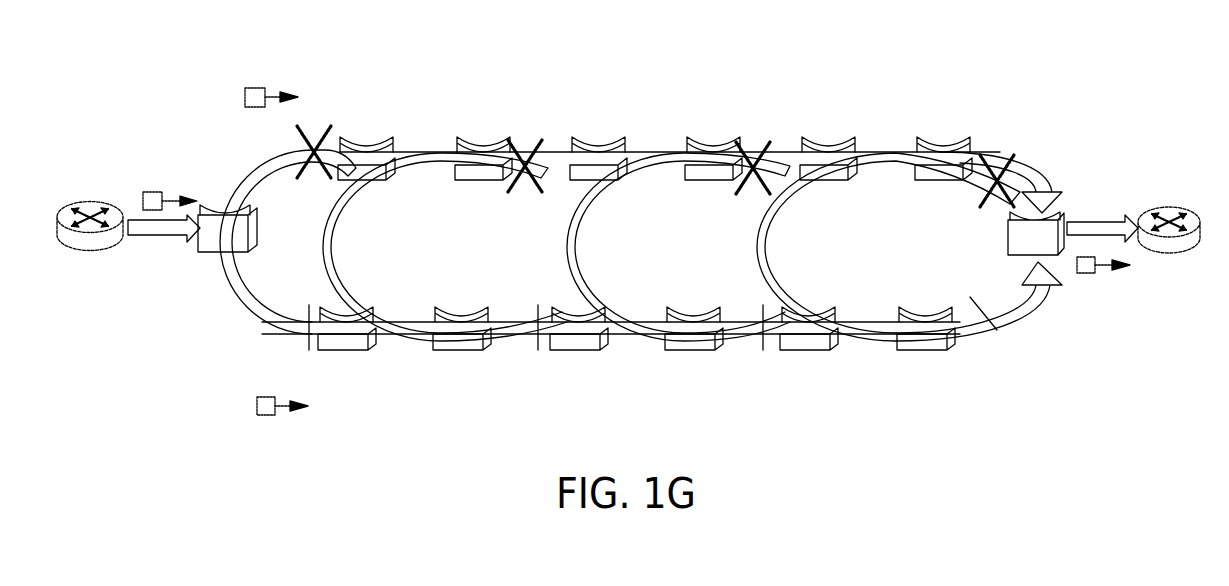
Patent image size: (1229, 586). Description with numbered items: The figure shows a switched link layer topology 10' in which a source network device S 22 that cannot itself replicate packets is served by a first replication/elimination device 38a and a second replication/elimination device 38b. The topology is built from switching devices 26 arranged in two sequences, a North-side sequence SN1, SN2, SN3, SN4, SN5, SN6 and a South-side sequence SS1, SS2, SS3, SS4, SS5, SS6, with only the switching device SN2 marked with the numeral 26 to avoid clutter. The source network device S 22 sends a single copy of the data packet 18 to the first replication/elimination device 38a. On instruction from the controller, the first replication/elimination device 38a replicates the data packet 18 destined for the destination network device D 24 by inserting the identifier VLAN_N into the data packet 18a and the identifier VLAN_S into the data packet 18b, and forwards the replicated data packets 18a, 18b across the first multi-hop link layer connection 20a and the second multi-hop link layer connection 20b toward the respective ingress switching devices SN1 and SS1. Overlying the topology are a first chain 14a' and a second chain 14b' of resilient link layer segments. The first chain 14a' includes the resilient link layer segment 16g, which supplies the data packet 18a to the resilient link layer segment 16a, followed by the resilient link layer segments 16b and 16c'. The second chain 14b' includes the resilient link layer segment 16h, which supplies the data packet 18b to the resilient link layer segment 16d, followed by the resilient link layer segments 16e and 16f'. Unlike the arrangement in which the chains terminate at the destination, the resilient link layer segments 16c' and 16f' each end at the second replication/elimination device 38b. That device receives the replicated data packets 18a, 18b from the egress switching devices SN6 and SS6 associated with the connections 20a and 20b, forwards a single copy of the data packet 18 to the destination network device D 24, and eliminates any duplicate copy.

The switched link layer topology 10' is at (1133, 58).
The first chain of resilient link layer segments 14a' is at (264, 231).
The second chain of resilient link layer segments 14b' is at (264, 231).
The resilient link layer segment 16a is at (445, 247).
The resilient link layer segment 16d is at (332, 245).
The resilient link layer segment 16b is at (678, 247).
The resilient link layer segment 16e is at (574, 245).
The resilient link layer segment 16c' is at (888, 247).
The resilient link layer segment 16f' is at (888, 247).
The resilient link layer segment 16g is at (254, 368).
The resilient link layer segment 16h is at (250, 328).
The data packet 18 is at (150, 190).
The replicated data packet 18a is at (252, 88).
The replicated data packet 18b is at (265, 417).
The first multi-hop link layer connection 20a is at (1037, 158).
The second multi-hop link layer connection 20b is at (1040, 332).
The source network device 22 is at (90, 247).
The destination network device 24 is at (1169, 247).
The switching device 26 is at (466, 184).
The first replication/elimination device 38a is at (207, 254).
The second replication/elimination device 38b is at (1062, 210).
The source network device S is at (90, 213).
The destination network device D is at (1169, 214).
The switching device SN1 is at (372, 143).
The switching device SN2 is at (489, 143).
The switching device SN3 is at (604, 143).
The switching device SN4 is at (719, 143).
The switching device SN5 is at (834, 143).
The switching device SN6 is at (949, 143).
The switching device SS1 is at (356, 352).
The switching device SS2 is at (471, 352).
The switching device SS3 is at (588, 352).
The switching device SS4 is at (703, 352).
The switching device SS5 is at (818, 352).
The switching device SS6 is at (935, 352).